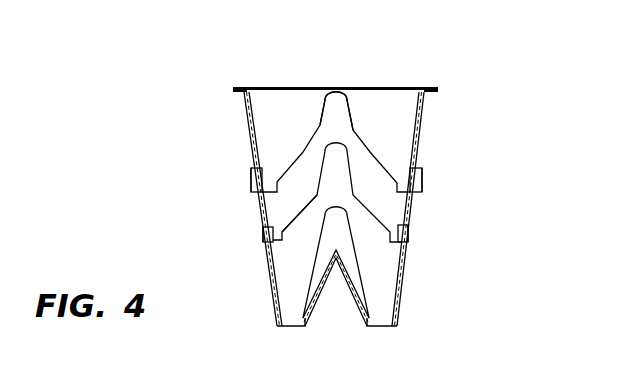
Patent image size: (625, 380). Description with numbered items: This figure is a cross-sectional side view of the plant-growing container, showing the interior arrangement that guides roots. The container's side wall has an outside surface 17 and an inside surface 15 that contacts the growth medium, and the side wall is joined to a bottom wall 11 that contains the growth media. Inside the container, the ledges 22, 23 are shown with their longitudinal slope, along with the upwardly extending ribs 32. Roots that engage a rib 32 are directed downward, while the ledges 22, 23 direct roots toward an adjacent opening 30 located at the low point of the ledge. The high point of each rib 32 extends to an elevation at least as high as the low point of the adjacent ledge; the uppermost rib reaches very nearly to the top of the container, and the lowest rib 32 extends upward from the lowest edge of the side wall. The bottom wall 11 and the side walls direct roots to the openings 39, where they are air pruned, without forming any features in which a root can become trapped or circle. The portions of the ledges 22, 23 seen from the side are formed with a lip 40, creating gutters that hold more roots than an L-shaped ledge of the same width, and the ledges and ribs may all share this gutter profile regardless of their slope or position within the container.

The bottom wall 11 is at (347, 289).
The inside surface 15 is at (249, 102).
The outside surface 17 is at (248, 126).
The ledge 22 is at (298, 150).
The ledge 23 is at (302, 212).
The opening 30 is at (258, 196).
The upwardly extending rib 32 is at (350, 118).
The opening 39 is at (278, 327).
The lip 40 is at (258, 170).